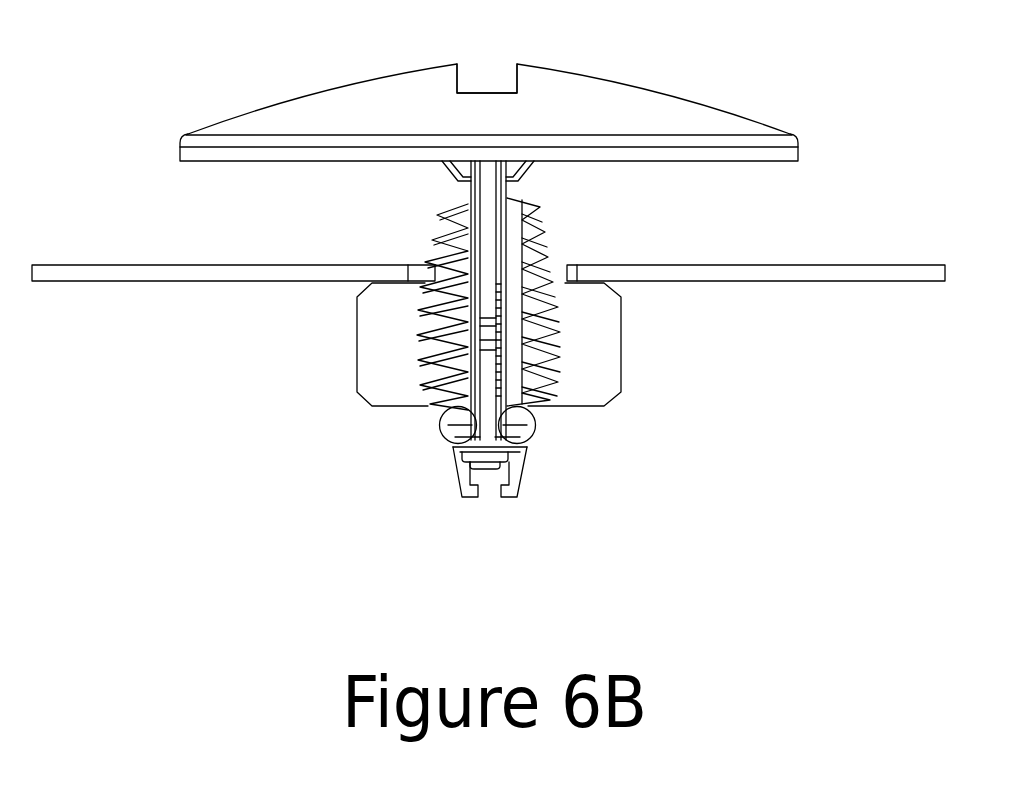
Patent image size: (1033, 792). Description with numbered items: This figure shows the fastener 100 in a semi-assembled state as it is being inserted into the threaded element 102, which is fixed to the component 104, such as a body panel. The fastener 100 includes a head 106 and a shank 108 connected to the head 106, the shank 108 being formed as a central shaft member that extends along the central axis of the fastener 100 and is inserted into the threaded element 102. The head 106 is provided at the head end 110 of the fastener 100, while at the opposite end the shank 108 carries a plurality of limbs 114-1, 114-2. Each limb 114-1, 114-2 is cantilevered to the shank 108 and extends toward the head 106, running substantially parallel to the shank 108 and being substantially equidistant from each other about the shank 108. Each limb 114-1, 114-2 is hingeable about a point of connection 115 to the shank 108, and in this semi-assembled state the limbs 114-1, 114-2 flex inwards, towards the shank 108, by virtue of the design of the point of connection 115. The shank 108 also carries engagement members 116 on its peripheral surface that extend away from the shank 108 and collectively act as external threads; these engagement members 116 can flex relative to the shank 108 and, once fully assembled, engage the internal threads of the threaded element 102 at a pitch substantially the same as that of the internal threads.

The fastener 100 is at (636, 92).
The threaded element 102 is at (375, 335).
The component 104 is at (810, 272).
The head 106 is at (330, 118).
The shank 108 is at (488, 188).
The head end 110 is at (495, 62).
The limb 114-1 is at (458, 352).
The limb 114-2 is at (528, 286).
The point of connection 115 is at (466, 460).
The engagement members 116 is at (425, 247).